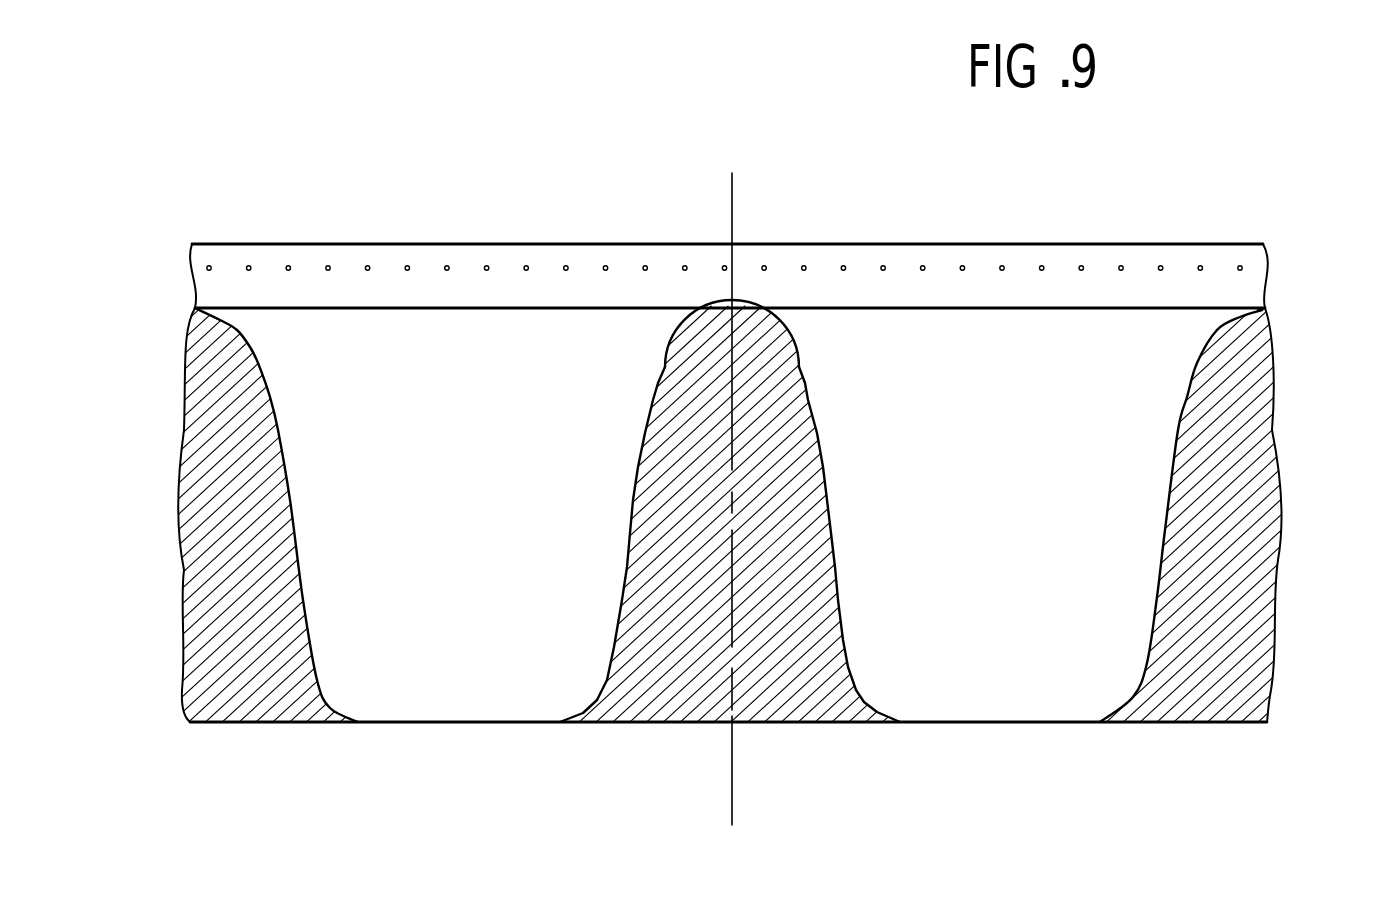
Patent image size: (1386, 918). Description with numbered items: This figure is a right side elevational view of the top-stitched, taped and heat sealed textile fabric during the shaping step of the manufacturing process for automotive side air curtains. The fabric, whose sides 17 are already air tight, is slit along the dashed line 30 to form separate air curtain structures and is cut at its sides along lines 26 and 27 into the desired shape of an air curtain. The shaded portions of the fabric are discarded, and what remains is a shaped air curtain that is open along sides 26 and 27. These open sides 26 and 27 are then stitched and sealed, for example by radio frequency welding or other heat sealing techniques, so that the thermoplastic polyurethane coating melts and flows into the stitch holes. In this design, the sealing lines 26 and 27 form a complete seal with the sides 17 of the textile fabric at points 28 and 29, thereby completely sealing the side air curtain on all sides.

The sides 17 is at (997, 699).
The cutting line 26 is at (630, 638).
The cutting line 27 is at (300, 585).
The point 28 is at (668, 311).
The point 29 is at (245, 323).
The dashed line 30 is at (732, 216).